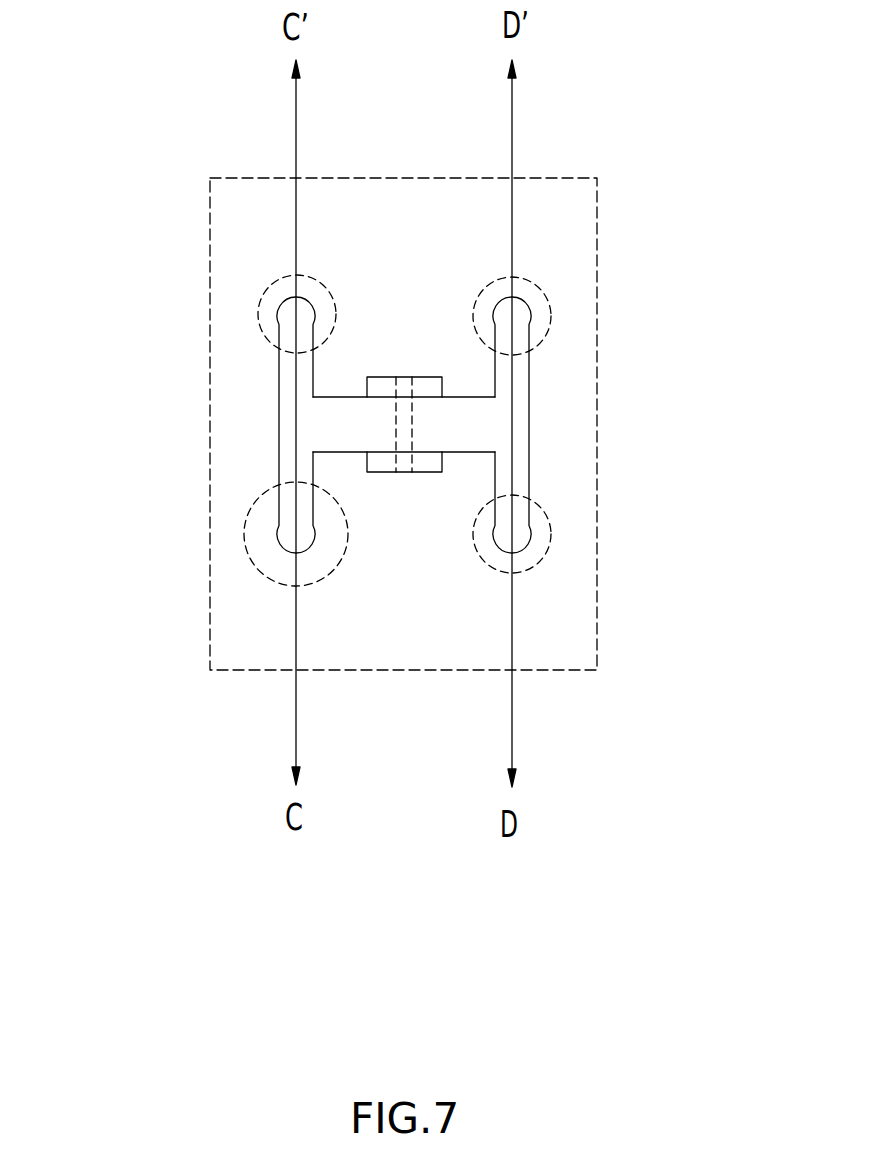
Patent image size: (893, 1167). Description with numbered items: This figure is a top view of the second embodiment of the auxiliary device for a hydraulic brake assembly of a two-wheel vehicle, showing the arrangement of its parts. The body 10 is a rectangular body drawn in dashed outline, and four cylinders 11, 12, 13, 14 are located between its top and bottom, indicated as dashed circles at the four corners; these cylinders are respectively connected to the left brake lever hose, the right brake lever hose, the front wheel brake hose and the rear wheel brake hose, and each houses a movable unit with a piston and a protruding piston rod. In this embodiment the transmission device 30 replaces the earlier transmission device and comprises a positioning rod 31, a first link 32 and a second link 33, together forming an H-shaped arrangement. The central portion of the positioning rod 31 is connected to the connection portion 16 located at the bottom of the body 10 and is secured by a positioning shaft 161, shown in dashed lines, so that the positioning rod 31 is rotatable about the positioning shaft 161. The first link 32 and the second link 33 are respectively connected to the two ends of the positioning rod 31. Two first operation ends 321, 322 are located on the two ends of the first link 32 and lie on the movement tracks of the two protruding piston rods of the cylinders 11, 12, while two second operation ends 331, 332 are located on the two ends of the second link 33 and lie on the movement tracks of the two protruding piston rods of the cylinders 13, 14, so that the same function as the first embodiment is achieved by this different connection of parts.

The body 10 is at (568, 187).
The cylinder 11 is at (530, 292).
The cylinder 12 is at (530, 557).
The cylinder 13 is at (275, 292).
The cylinder 14 is at (262, 567).
The connection portion 16 is at (394, 448).
The positioning shaft 161 is at (395, 423).
The transmission device 30 is at (390, 559).
The positioning rod 31 is at (465, 410).
The first link 32 is at (623, 425).
The first operation end 321 is at (522, 313).
The first operation end 322 is at (522, 537).
The second link 33 is at (171, 425).
The second operation end 331 is at (287, 313).
The second operation end 332 is at (283, 537).